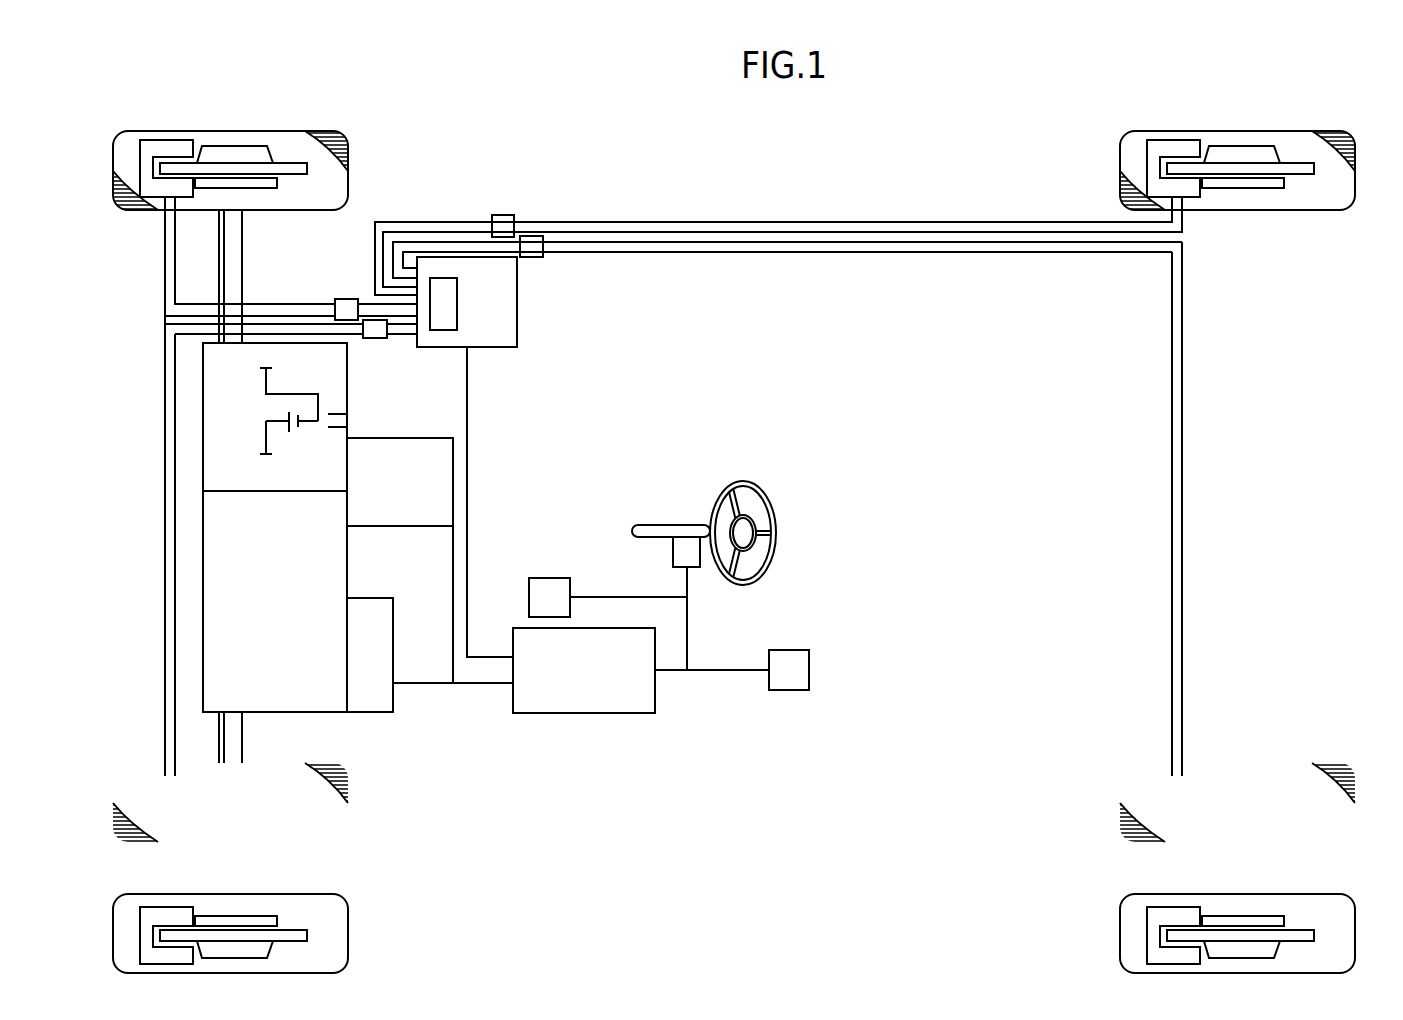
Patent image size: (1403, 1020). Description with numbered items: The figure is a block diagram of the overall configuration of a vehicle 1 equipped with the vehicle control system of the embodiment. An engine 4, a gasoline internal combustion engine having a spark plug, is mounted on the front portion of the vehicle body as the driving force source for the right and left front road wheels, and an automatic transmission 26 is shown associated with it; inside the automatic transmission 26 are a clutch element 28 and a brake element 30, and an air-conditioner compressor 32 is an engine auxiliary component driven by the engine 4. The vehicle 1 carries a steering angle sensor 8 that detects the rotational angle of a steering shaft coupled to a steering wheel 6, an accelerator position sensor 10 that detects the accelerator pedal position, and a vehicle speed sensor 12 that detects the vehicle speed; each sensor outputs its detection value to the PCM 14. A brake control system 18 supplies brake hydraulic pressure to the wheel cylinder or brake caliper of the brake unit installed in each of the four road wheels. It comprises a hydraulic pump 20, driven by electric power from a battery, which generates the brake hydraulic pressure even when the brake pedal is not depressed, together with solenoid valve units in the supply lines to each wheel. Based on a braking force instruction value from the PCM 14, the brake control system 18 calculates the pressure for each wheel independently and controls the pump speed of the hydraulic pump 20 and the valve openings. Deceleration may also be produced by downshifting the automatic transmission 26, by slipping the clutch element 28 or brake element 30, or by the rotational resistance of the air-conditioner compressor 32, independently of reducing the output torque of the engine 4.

The vehicle 1 is at (1345, 633).
The engine 4 is at (348, 553).
The steering wheel 6 is at (745, 481).
The steering angle sensor 8 is at (672, 557).
The accelerator position sensor 10 is at (548, 578).
The vehicle speed sensor 12 is at (800, 650).
The PCM 14 is at (640, 714).
The brake control system 18 is at (511, 348).
The hydraulic pump 20 is at (448, 331).
The automatic transmission 26 is at (348, 378).
The clutch element 28 is at (288, 433).
The brake element 30 is at (346, 428).
The air-conditioner compressor 32 is at (395, 640).